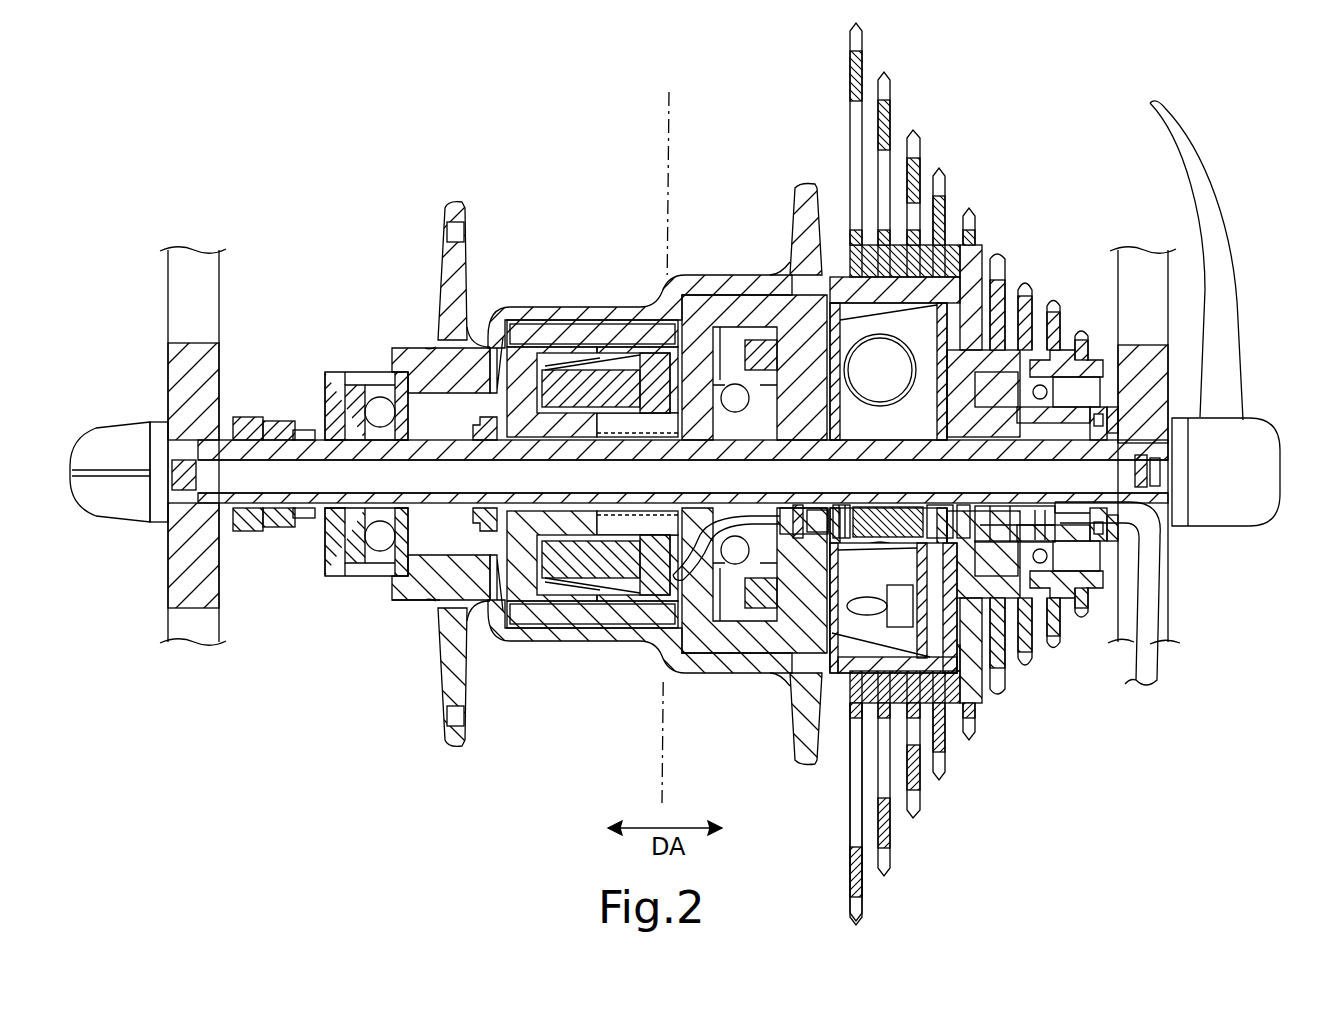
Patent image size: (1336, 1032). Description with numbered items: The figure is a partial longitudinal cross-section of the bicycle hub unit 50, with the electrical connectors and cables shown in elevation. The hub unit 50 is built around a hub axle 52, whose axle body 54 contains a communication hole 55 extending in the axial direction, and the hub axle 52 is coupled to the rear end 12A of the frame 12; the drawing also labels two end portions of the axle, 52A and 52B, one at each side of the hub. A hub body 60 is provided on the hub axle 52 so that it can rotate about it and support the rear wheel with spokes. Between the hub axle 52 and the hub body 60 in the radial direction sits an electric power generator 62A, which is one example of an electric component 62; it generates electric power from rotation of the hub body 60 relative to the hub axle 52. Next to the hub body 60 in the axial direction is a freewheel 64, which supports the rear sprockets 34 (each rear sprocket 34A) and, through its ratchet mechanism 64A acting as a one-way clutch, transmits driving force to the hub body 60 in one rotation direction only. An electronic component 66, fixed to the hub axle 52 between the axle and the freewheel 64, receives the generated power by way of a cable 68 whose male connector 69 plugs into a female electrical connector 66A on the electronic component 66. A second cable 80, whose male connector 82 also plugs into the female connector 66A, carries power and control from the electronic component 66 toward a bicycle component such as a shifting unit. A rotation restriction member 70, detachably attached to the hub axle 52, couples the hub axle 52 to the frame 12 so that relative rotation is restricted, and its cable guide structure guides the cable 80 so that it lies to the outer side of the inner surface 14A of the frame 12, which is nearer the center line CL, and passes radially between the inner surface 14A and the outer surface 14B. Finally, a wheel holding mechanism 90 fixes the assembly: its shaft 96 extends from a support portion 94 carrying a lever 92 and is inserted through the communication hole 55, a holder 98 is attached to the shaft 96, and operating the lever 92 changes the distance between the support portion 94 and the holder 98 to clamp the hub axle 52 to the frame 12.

The frame 12 is at (1168, 638).
The rear end 12A is at (168, 309).
The inner surface 14A is at (1107, 620).
The outer surface 14B is at (1183, 262).
The rear sprockets 34 is at (1068, 714).
The rear sprocket 34A is at (945, 777).
The hub unit 50 is at (1100, 68).
The hub axle 52 is at (417, 430).
The first axle end 52A is at (1137, 440).
The second axle end 52B is at (225, 437).
The axle body 54 is at (430, 503).
The communication hole 55 is at (318, 480).
The hub body 60 is at (522, 204).
The electric component 62 is at (592, 474).
The electric power generator 62A is at (558, 320).
The freewheel 64 is at (975, 670).
The ratchet mechanism 64A is at (790, 262).
The electronic component 66 is at (975, 258).
The female electrical connector 66A is at (880, 497).
The cable 68 is at (693, 543).
The connector 69 is at (813, 495).
The rotation restriction member 70 is at (1150, 545).
The cable 80 is at (1158, 597).
The connector 82 is at (987, 507).
The wheel holding mechanism 90 is at (1235, 308).
The lever 92 is at (1213, 193).
The support portion 94 is at (1277, 438).
The shaft 96 is at (1160, 457).
The holder 98 is at (105, 530).
The center line CL is at (677, 100).